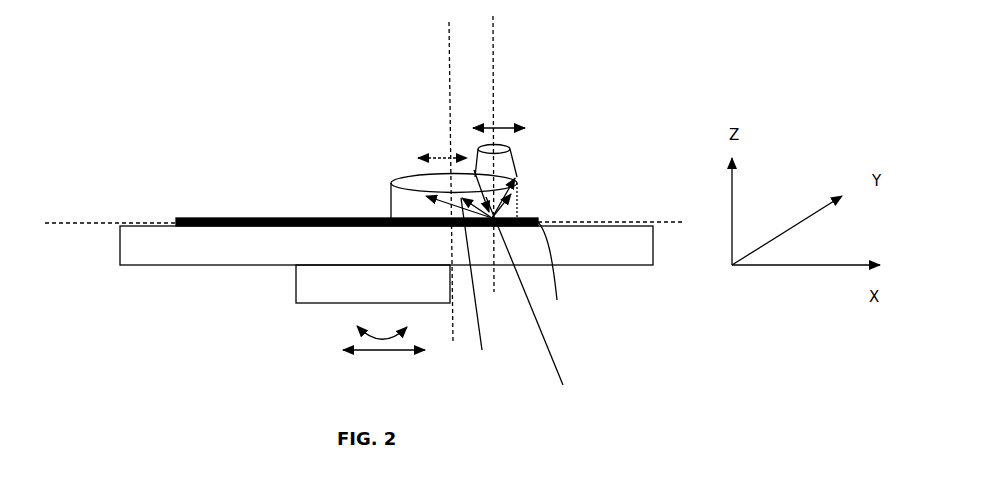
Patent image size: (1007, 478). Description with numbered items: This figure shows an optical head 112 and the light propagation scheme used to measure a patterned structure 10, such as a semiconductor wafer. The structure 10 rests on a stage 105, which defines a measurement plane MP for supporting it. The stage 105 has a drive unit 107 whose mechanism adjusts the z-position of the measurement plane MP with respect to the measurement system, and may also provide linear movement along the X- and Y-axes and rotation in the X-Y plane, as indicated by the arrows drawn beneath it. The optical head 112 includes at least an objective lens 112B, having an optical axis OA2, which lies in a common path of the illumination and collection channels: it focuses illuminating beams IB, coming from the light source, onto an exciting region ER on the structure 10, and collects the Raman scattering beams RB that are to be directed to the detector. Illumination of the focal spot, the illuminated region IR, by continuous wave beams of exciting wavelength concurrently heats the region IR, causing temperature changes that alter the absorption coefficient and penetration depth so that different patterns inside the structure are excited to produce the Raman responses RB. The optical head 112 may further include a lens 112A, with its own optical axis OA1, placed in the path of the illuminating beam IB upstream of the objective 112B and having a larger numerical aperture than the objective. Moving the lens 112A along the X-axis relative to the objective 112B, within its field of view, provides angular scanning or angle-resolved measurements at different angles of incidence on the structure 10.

The patterned structure 10 is at (268, 218).
The stage 105 is at (118, 243).
The drive unit 107 is at (293, 295).
The optical head 112 is at (480, 146).
The lens 112A is at (512, 150).
The objective lens 112B is at (517, 178).
The measurement plane MP is at (88, 222).
The optical axis OA1 is at (499, 146).
The optical axis OA2 is at (436, 179).
The illuminated region IR is at (494, 218).
The illuminating beam IB is at (551, 271).
The Raman scattering beam RB is at (483, 286).
The exciting region ER is at (540, 307).